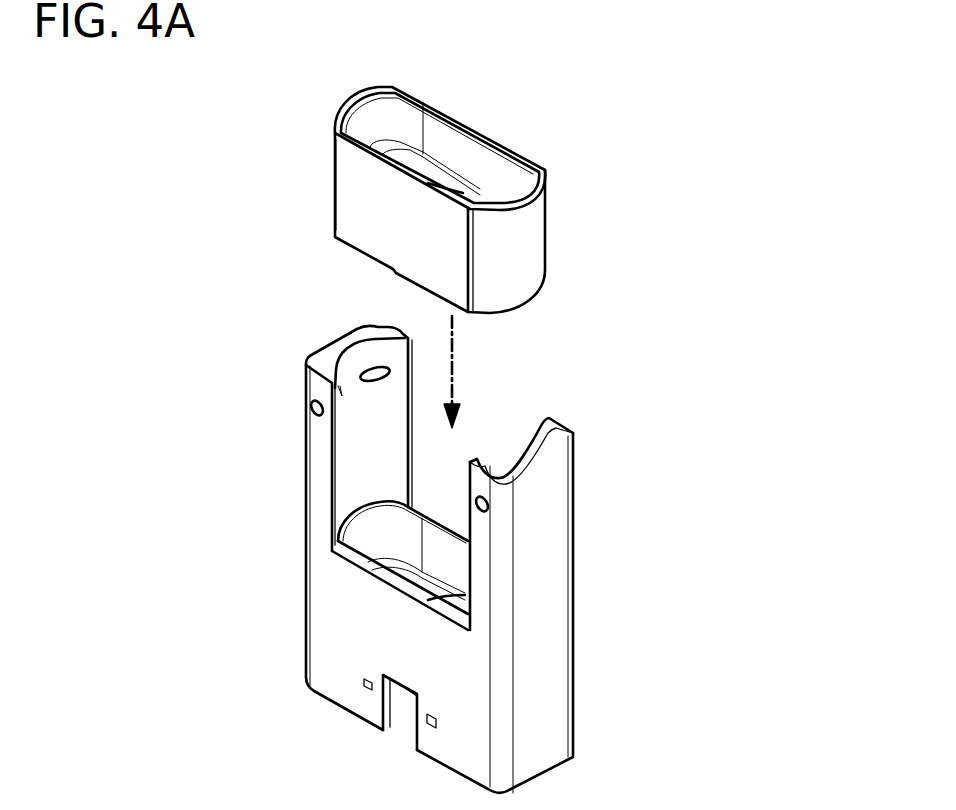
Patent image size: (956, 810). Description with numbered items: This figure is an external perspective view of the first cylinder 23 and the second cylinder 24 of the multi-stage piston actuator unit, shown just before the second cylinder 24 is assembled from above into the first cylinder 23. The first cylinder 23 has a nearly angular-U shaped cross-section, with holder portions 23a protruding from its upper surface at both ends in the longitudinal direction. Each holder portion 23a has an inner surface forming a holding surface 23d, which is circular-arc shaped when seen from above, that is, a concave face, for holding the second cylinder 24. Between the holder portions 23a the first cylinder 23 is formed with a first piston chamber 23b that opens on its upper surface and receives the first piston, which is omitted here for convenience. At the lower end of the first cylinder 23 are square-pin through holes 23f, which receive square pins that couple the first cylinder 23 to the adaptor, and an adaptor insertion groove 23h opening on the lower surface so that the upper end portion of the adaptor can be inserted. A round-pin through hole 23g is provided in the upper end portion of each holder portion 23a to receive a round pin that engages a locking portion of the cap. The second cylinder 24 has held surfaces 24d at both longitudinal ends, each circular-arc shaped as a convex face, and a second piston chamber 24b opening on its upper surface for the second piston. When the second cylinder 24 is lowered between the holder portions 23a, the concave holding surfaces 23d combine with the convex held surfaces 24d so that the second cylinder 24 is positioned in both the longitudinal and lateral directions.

The first cylinder 23 is at (462, 548).
The holder portion 23a is at (315, 391).
The first piston chamber 23b is at (452, 553).
The holding surface 23d is at (363, 401).
The square-pin through hole 23f is at (365, 689).
The round-pin through hole 23g is at (312, 410).
The adaptor insertion groove 23h is at (398, 700).
The second cylinder 24 is at (461, 200).
The second piston chamber 24b is at (483, 158).
The held surface 24d is at (347, 95).